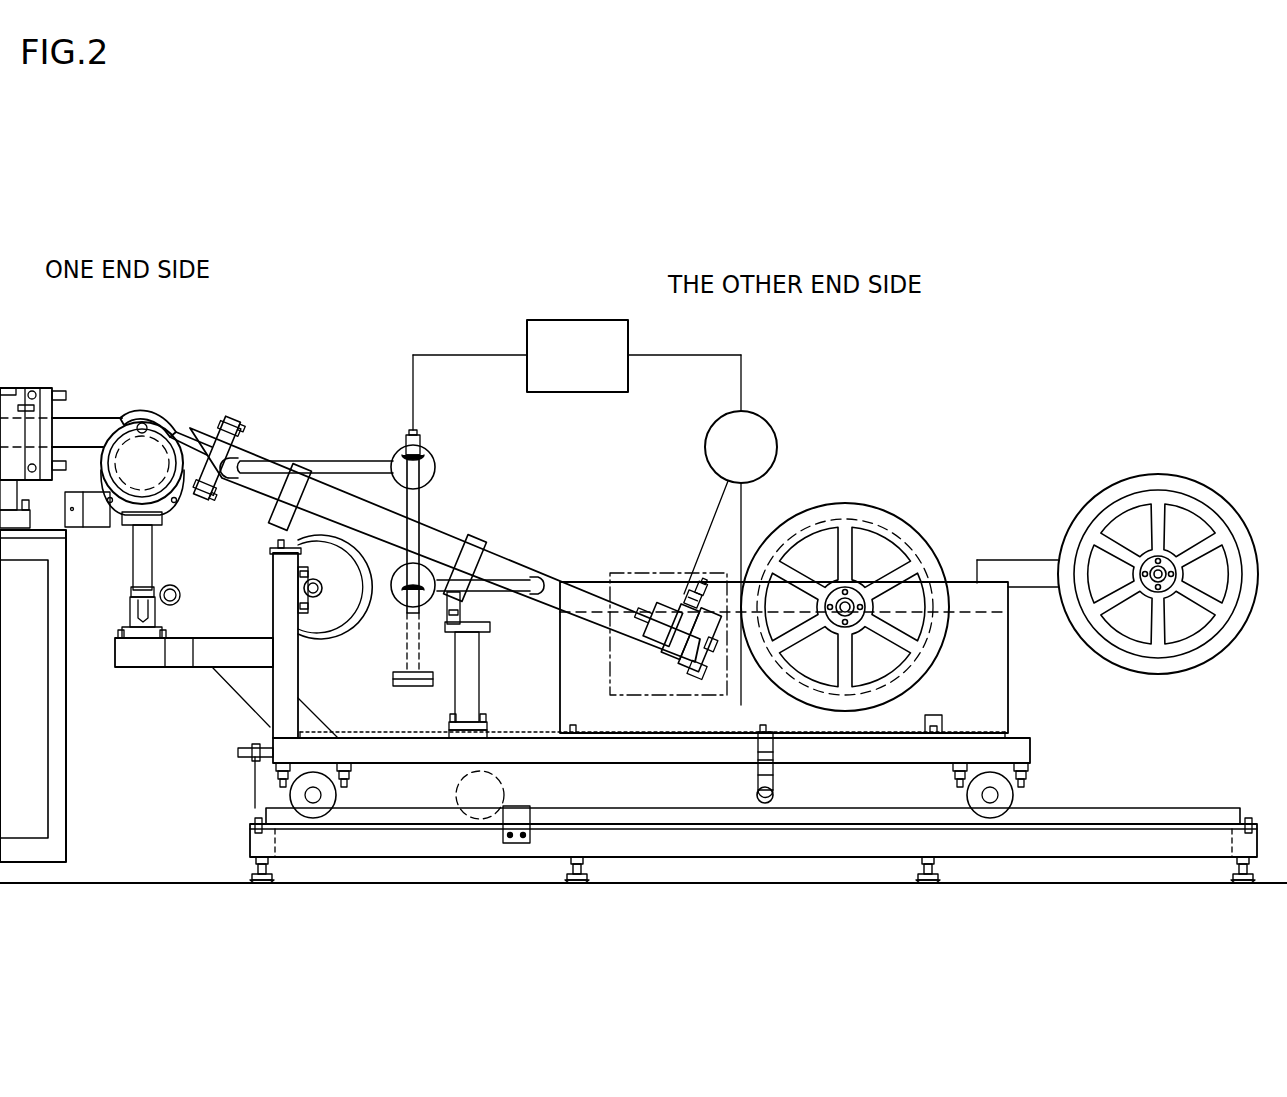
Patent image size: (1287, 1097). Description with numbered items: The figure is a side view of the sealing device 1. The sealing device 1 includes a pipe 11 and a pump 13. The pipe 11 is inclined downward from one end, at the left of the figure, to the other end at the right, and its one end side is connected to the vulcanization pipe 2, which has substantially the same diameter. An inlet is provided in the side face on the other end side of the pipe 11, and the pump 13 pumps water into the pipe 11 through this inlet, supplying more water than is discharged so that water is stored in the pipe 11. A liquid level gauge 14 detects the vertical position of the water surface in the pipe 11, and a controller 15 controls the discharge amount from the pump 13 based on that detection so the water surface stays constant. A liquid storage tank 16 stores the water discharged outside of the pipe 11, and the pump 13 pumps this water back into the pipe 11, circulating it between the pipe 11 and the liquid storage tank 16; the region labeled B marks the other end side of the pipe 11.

The sealing device 1 is at (522, 232).
The vulcanization pipe 2 is at (93, 413).
The pipe 11 is at (511, 553).
The pump 13 is at (776, 447).
The liquid level gauge 14 is at (398, 452).
The controller 15 is at (595, 374).
The liquid storage tank 16 is at (955, 580).
The brake B is at (668, 572).